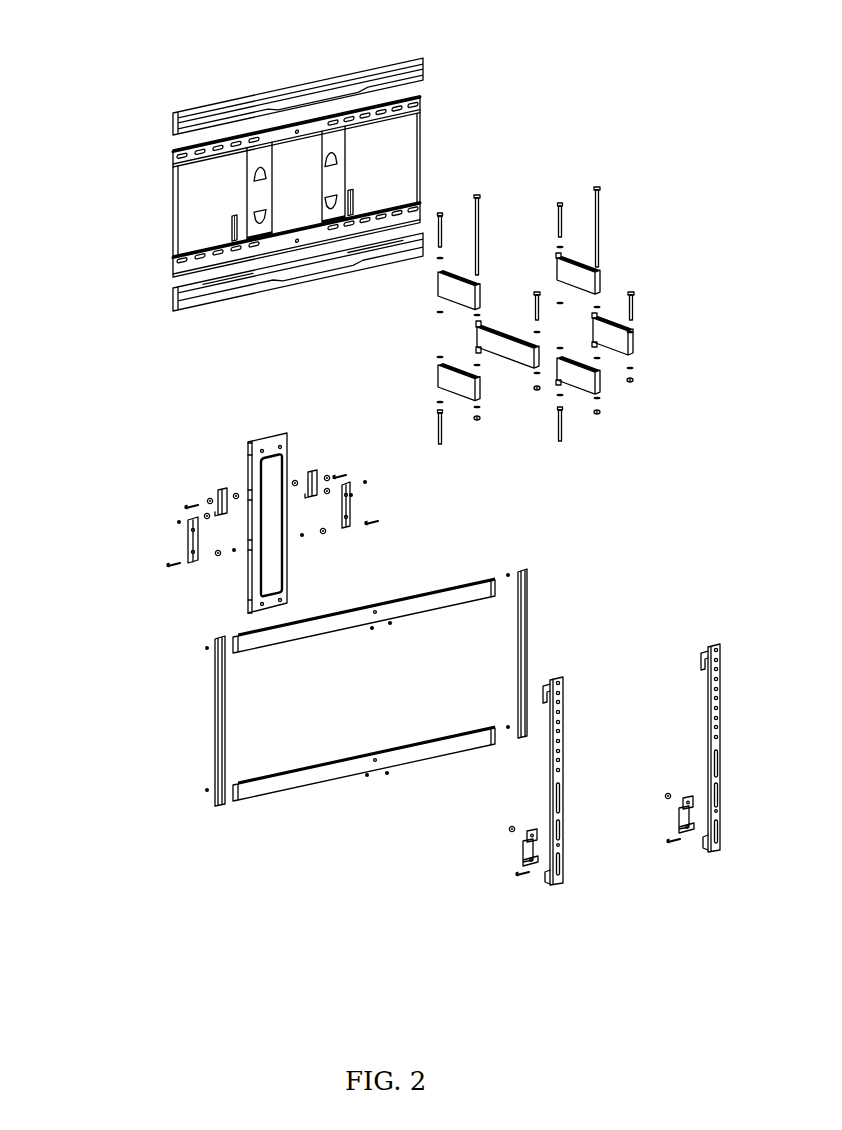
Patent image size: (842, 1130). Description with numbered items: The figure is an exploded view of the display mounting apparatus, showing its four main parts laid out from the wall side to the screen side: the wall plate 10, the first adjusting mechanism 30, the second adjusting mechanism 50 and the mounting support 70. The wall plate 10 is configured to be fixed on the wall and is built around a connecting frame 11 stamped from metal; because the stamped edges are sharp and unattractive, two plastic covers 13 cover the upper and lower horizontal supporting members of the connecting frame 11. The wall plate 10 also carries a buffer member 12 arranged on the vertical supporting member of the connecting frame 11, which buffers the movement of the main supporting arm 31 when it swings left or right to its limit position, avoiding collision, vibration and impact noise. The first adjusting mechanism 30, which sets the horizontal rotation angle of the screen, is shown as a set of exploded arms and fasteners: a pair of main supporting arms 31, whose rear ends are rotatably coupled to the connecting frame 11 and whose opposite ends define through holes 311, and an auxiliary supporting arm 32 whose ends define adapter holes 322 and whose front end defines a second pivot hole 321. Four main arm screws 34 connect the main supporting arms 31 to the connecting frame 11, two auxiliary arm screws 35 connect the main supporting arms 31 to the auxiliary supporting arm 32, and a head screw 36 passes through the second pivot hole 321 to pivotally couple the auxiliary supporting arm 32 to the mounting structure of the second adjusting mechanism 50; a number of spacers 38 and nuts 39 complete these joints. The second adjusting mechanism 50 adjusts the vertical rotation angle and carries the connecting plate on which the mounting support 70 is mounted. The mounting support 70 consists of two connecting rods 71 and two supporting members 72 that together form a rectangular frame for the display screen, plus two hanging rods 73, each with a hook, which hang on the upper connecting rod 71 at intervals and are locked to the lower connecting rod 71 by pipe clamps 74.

The wall plate 10 is at (163, 193).
The connecting frame 11 is at (420, 157).
The buffer member 12 is at (232, 228).
The plastic cover 13 is at (303, 82).
The first adjusting mechanism 30 is at (658, 222).
The main supporting arm 31 is at (455, 293).
The through hole 311 is at (434, 269).
The auxiliary supporting arm 32 is at (505, 347).
The second pivot hole 321 is at (628, 338).
The adapter hole 322 is at (600, 307).
The main arm screw 34 is at (443, 224).
The auxiliary arm screw 35 is at (482, 225).
The head screw 36 is at (532, 303).
The spacer 38 is at (636, 383).
The nut 39 is at (601, 415).
The second adjusting mechanism 50 is at (217, 470).
The mounting support 70 is at (180, 723).
The connecting rod 71 is at (438, 588).
The supporting member 72 is at (220, 705).
The hanging rod 73 is at (565, 745).
The pipe clamp 74 is at (522, 847).